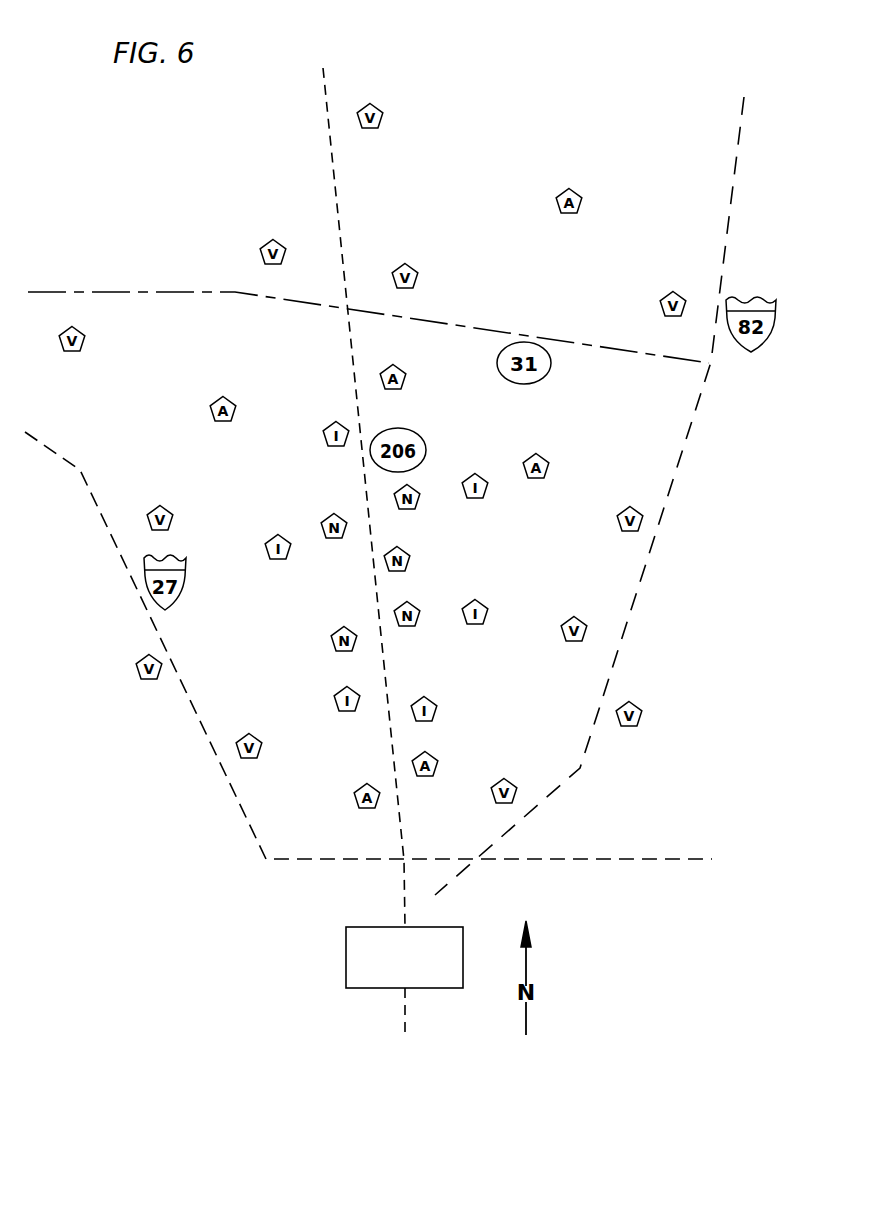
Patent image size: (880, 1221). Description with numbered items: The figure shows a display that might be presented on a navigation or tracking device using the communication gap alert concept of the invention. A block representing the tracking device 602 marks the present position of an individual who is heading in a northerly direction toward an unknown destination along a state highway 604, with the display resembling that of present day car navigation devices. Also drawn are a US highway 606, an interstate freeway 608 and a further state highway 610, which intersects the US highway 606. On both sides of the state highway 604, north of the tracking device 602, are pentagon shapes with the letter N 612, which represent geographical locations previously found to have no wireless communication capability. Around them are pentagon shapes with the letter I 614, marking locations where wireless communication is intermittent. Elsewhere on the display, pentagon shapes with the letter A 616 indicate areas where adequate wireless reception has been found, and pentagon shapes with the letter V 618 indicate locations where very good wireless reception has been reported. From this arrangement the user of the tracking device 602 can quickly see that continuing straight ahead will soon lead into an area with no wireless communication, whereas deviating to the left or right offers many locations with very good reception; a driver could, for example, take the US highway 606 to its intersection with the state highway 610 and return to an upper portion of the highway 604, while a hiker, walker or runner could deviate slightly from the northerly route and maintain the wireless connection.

The tracking device 602 is at (376, 948).
The state highway 604 is at (335, 551).
The US highway 606 is at (607, 496).
The interstate freeway 608 is at (369, 645).
The state highway 610 is at (368, 304).
The pentagon shapes with letter N 612 is at (383, 568).
The pentagon shapes with letter I 614 is at (369, 556).
The pentagon shapes with letter A 616 is at (369, 498).
The pentagon shapes with letter V 618 is at (372, 453).